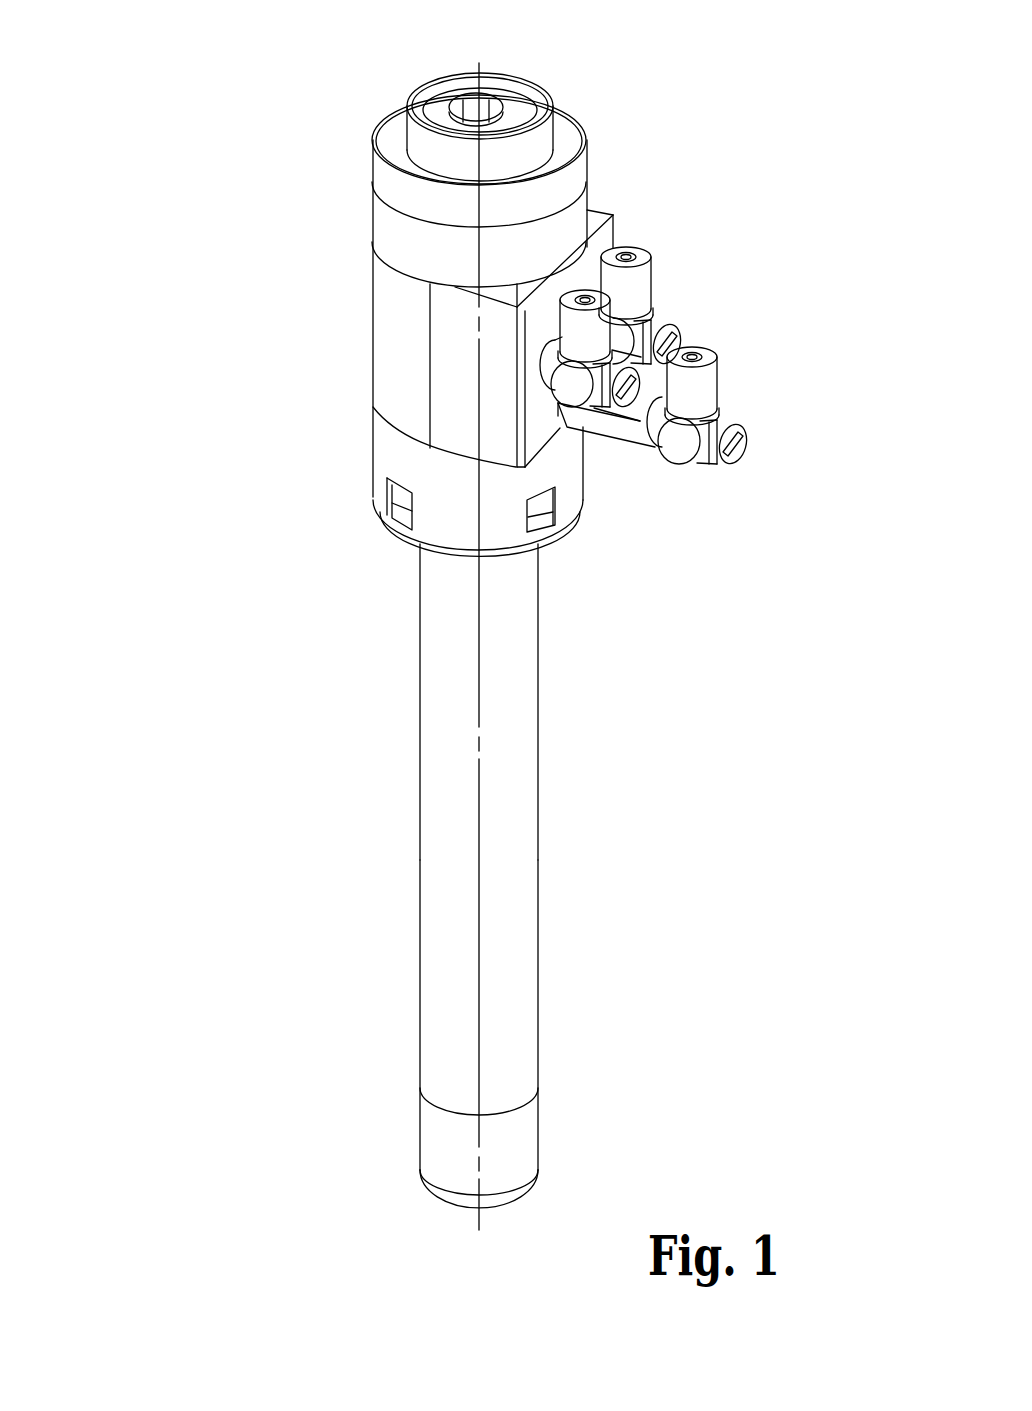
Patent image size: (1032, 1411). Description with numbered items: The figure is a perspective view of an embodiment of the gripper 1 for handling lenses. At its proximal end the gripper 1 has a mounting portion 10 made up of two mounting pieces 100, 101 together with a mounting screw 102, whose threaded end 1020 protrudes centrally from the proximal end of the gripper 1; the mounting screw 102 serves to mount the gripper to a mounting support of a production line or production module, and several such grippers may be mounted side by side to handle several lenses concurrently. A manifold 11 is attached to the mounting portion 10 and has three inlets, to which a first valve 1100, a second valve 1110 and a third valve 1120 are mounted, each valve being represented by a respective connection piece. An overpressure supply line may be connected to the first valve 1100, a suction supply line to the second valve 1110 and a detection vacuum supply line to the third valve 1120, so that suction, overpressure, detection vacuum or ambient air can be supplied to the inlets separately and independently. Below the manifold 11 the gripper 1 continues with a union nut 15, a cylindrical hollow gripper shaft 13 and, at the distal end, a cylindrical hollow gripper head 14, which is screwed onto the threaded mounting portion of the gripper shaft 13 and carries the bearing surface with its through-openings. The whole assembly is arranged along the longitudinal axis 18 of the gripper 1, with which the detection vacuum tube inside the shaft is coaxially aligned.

The gripper 1 is at (212, 349).
The mounting portion 10 is at (594, 170).
The mounting piece 100 is at (555, 237).
The mounting piece 101 is at (398, 158).
The mounting screw 102 is at (497, 110).
The threaded end 1020 is at (473, 112).
The manifold 11 is at (410, 369).
The union nut 15 is at (477, 497).
The longitudinal axis 18 is at (477, 663).
The gripper shaft 13 is at (457, 915).
The gripper head 14 is at (446, 1134).
The first valve 1100 is at (592, 327).
The second valve 1110 is at (640, 292).
The third valve 1120 is at (610, 422).